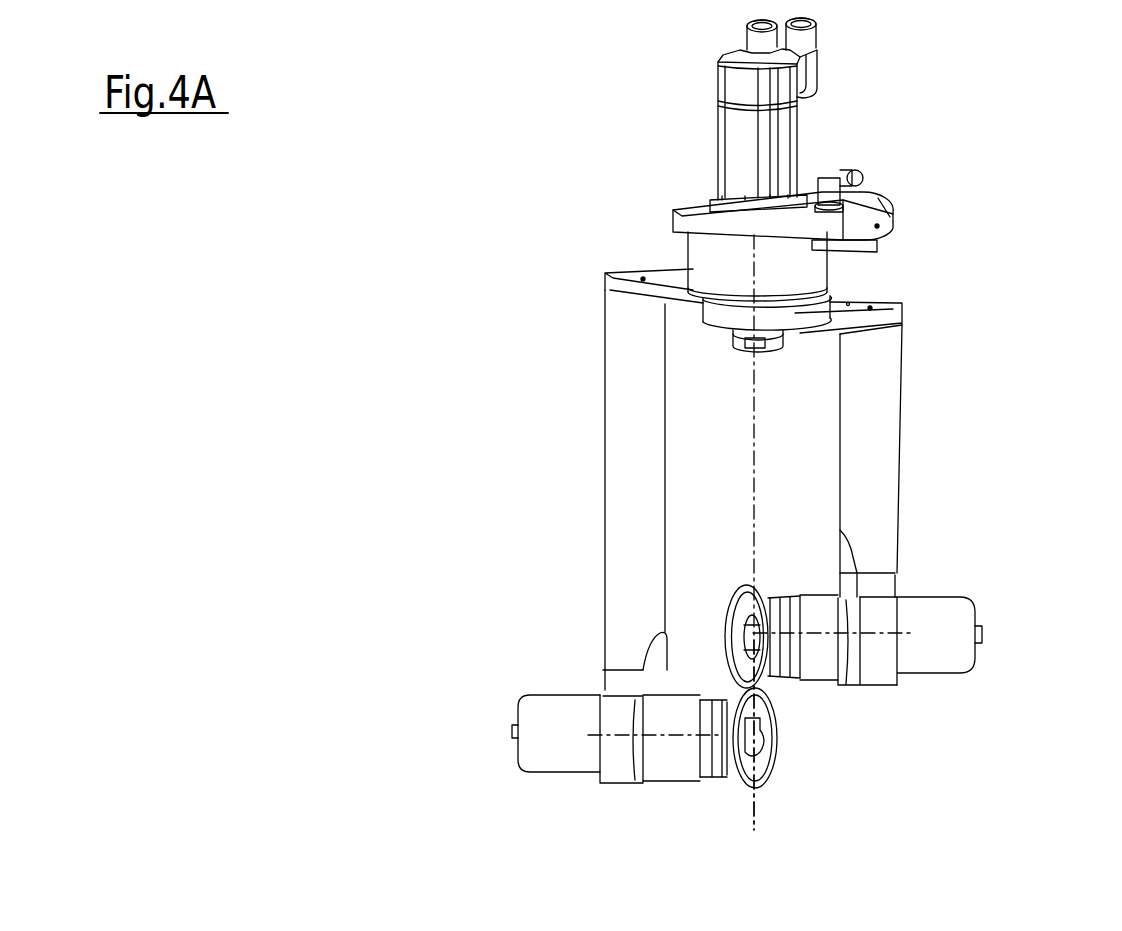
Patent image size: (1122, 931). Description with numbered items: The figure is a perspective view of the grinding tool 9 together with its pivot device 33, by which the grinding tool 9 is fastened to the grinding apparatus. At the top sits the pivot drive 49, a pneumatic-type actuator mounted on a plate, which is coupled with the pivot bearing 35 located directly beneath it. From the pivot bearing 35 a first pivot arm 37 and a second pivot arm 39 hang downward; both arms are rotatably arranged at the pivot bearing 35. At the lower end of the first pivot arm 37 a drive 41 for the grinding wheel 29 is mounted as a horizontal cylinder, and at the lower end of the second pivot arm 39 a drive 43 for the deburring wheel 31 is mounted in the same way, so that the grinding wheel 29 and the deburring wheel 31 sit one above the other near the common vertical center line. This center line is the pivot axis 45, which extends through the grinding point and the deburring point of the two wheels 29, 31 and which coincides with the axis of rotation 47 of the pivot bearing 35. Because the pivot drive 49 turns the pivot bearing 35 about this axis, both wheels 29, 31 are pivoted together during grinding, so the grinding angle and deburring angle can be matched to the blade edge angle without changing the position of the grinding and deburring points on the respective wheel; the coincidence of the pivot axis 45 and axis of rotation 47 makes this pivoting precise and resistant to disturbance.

The grinding tool 9 is at (1042, 144).
The grinding wheel 29 is at (761, 588).
The deburring wheel 31 is at (777, 762).
The pivot device 33 is at (652, 240).
The pivot bearing 35 is at (832, 301).
The first pivot arm 37 is at (900, 472).
The second pivot arm 39 is at (600, 476).
The drive for the grinding wheel 41 is at (947, 596).
The drive for the deburring wheel 43 is at (545, 692).
The pivot axis 45 is at (754, 808).
The axis of rotation 47 is at (754, 808).
The pivot drive 49 is at (840, 131).